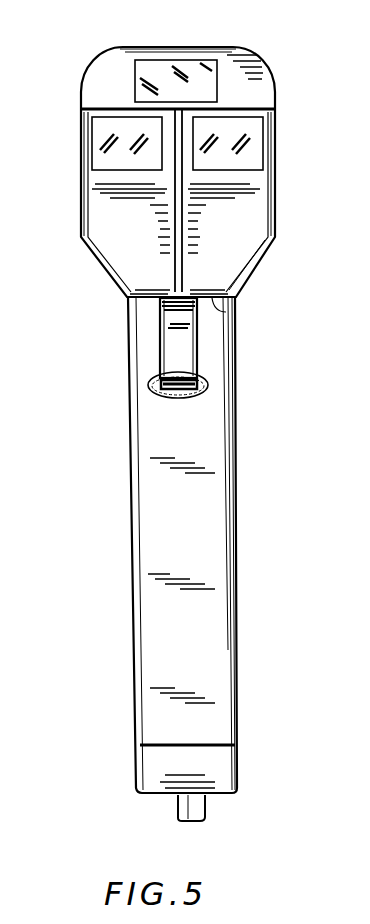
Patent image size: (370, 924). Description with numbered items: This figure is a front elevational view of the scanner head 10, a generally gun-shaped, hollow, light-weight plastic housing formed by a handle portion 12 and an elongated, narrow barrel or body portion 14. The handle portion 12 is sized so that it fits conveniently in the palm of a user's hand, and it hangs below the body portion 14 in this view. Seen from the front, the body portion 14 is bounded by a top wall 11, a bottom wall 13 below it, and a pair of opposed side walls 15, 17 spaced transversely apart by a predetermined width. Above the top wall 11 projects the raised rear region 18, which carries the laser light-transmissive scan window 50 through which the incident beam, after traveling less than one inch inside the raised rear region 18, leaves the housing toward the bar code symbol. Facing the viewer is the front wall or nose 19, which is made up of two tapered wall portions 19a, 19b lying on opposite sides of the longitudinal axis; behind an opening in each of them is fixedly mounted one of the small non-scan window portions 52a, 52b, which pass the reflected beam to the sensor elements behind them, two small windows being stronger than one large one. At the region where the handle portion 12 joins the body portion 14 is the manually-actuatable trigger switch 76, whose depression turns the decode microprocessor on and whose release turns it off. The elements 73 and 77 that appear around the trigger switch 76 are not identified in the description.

The head 10 is at (307, 182).
The top wall 11 is at (250, 108).
The handle portion 12 is at (258, 506).
The bottom wall 13 is at (214, 300).
The body portion 14 is at (285, 127).
The side wall 15 is at (275, 204).
The side wall 17 is at (82, 199).
The raised rear region 18 is at (118, 40).
The front wall 19 is at (250, 289).
The tapered wall portion 19a is at (142, 250).
The tapered wall portion 19b is at (248, 248).
The scan window 50 is at (190, 67).
The non-scan window portion 52a is at (110, 140).
The non-scan window portion 52b is at (250, 145).
The switch ring 73 is at (167, 396).
The trigger switch 76 is at (178, 362).
The switch slot 77 is at (168, 350).